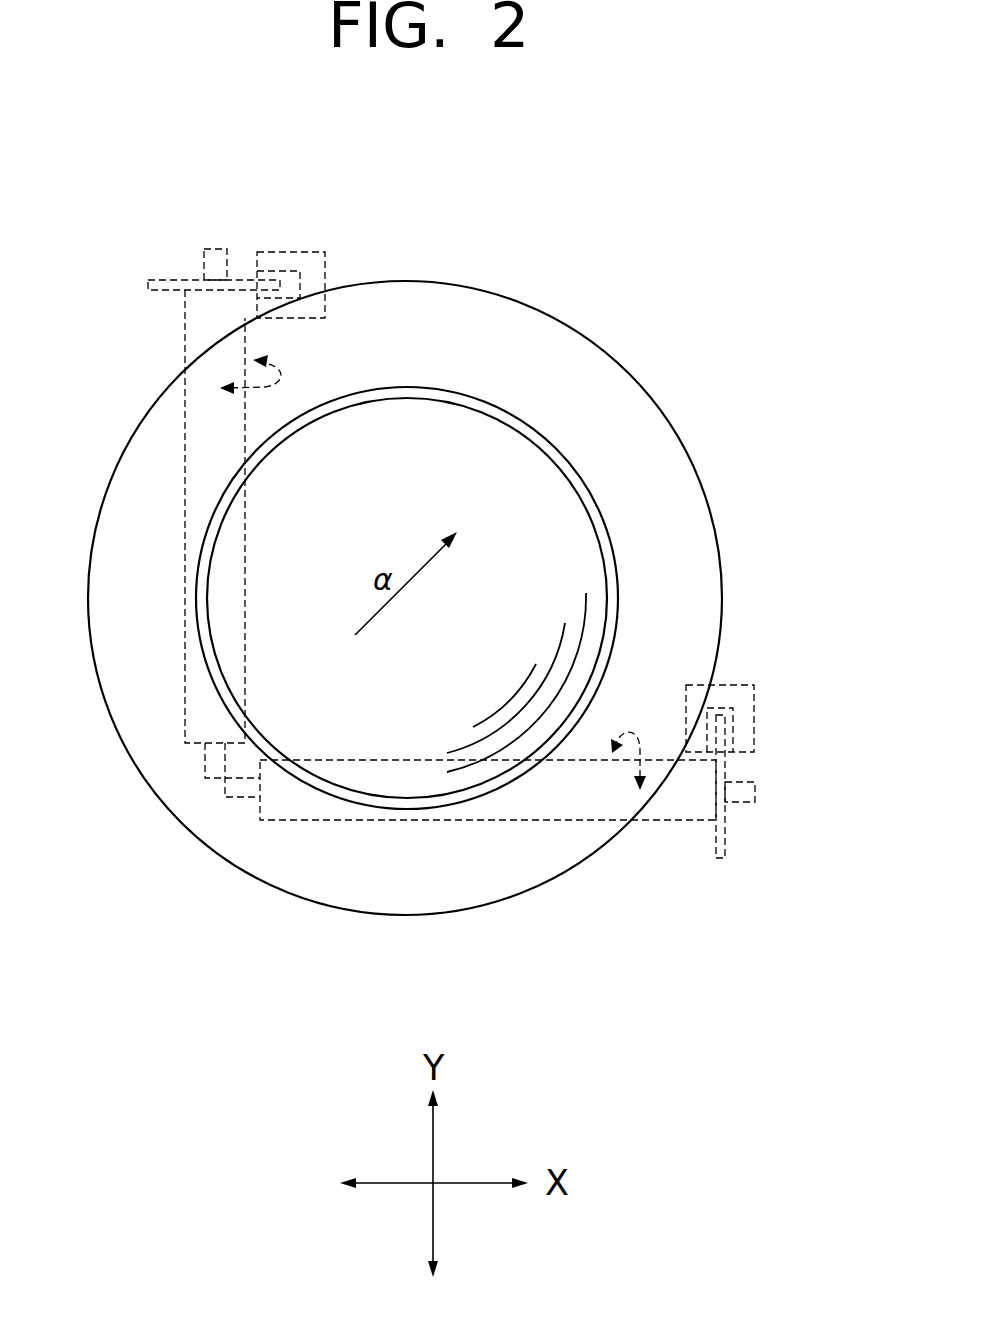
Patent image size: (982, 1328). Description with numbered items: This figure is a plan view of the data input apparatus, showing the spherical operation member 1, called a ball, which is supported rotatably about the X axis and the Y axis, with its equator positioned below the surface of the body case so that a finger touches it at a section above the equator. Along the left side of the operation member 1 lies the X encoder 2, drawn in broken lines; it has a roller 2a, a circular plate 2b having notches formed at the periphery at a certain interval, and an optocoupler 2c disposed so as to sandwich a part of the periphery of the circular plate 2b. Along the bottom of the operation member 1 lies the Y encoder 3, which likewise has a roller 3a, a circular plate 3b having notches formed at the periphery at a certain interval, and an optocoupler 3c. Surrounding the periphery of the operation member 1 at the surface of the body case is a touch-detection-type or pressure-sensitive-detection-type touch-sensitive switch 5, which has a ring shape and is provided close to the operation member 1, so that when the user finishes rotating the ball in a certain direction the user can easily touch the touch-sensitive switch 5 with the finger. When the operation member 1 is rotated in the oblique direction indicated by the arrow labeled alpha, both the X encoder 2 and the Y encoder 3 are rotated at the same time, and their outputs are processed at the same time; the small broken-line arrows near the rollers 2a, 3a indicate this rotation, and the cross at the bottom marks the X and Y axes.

The operation member 1 is at (467, 460).
The X encoder 2 is at (194, 489).
The roller 2a is at (195, 460).
The circular plate 2b is at (165, 278).
The optocoupler 2c is at (290, 250).
The Y encoder 3 is at (537, 822).
The roller 3a is at (297, 802).
The circular plate 3b is at (727, 845).
The optocoupler 3c is at (754, 722).
The touch-sensitive switch 5 is at (672, 494).